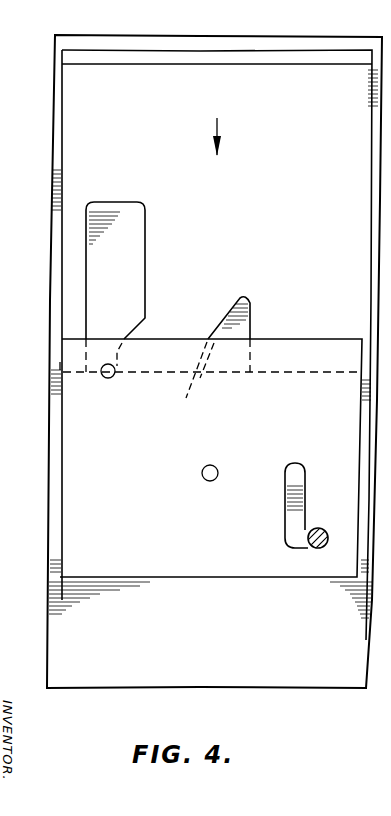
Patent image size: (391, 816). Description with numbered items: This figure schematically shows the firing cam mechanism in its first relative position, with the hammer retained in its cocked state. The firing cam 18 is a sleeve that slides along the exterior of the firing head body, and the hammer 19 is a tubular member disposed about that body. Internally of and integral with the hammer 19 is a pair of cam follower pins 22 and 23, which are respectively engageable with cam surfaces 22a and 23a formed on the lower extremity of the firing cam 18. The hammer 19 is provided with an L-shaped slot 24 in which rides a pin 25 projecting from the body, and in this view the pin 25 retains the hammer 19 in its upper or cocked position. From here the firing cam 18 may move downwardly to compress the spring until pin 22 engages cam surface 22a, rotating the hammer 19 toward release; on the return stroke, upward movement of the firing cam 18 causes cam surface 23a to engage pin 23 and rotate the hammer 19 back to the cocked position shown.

The firing cam 18 is at (95, 141).
The hammer 19 is at (208, 562).
The cam follower pin 22 is at (216, 467).
The cam surface 22a is at (218, 355).
The cam follower pin 23 is at (108, 378).
The cam surface 23a is at (131, 318).
The L-shaped slot 24 is at (302, 476).
The pin 25 is at (327, 520).